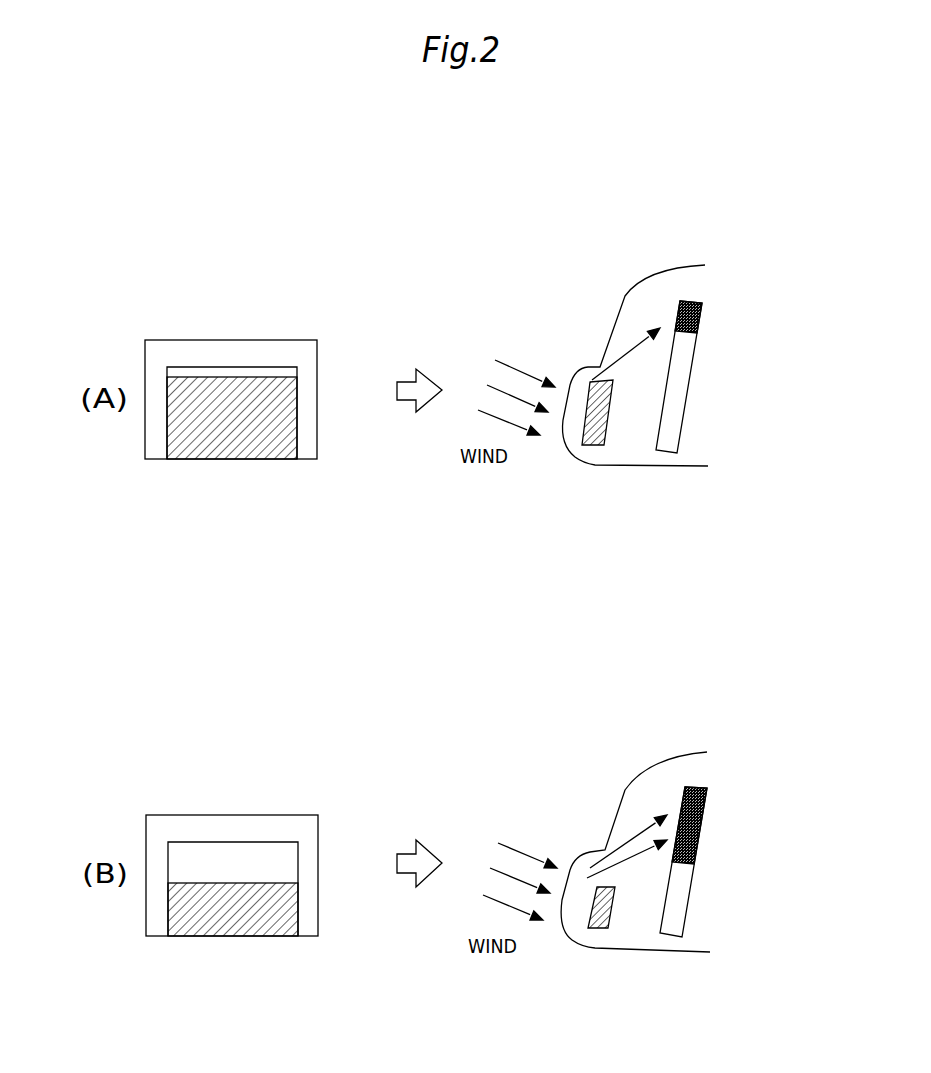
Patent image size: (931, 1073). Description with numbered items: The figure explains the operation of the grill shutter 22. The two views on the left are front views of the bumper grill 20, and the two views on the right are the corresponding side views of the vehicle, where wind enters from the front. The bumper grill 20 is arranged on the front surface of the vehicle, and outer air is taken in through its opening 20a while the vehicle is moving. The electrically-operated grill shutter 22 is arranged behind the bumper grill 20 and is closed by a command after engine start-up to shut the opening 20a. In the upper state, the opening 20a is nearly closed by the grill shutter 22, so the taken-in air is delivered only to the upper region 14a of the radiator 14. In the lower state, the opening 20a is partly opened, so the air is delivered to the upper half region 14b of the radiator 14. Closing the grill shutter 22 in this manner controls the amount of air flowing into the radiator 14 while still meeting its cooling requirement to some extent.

The bumper grill 20 is at (198, 340).
The opening 20a is at (255, 366).
The grill shutter 22 is at (297, 413).
The radiator 14 is at (705, 401).
The upper region 14a is at (703, 310).
The upper half region 14b is at (707, 823).